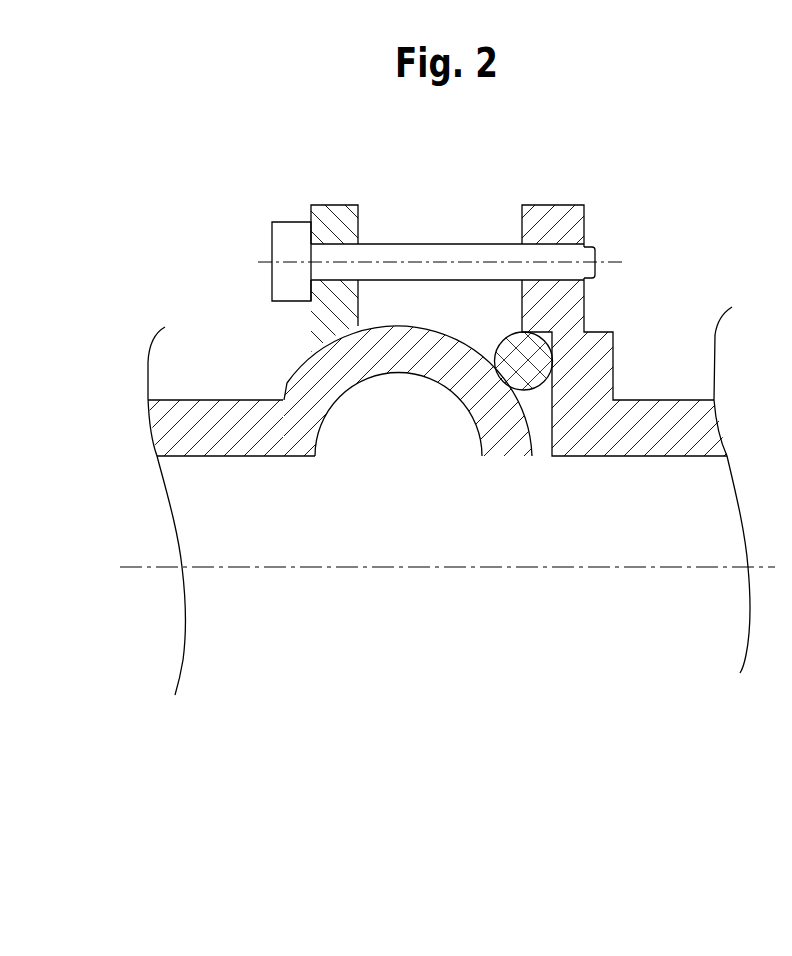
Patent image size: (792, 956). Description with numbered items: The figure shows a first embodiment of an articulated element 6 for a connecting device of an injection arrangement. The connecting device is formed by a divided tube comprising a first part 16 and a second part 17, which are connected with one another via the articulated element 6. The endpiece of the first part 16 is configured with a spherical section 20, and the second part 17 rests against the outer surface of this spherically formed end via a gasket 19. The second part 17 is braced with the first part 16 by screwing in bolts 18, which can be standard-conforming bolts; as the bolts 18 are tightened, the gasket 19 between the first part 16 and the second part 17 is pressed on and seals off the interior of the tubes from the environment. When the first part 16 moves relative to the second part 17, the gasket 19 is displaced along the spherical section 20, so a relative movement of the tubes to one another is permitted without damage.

The articulated element 6 is at (430, 283).
The first part 16 is at (210, 428).
The second part 17 is at (588, 437).
The bolts 18 is at (423, 248).
The gasket 19 is at (533, 362).
The spherical section 20 is at (462, 322).